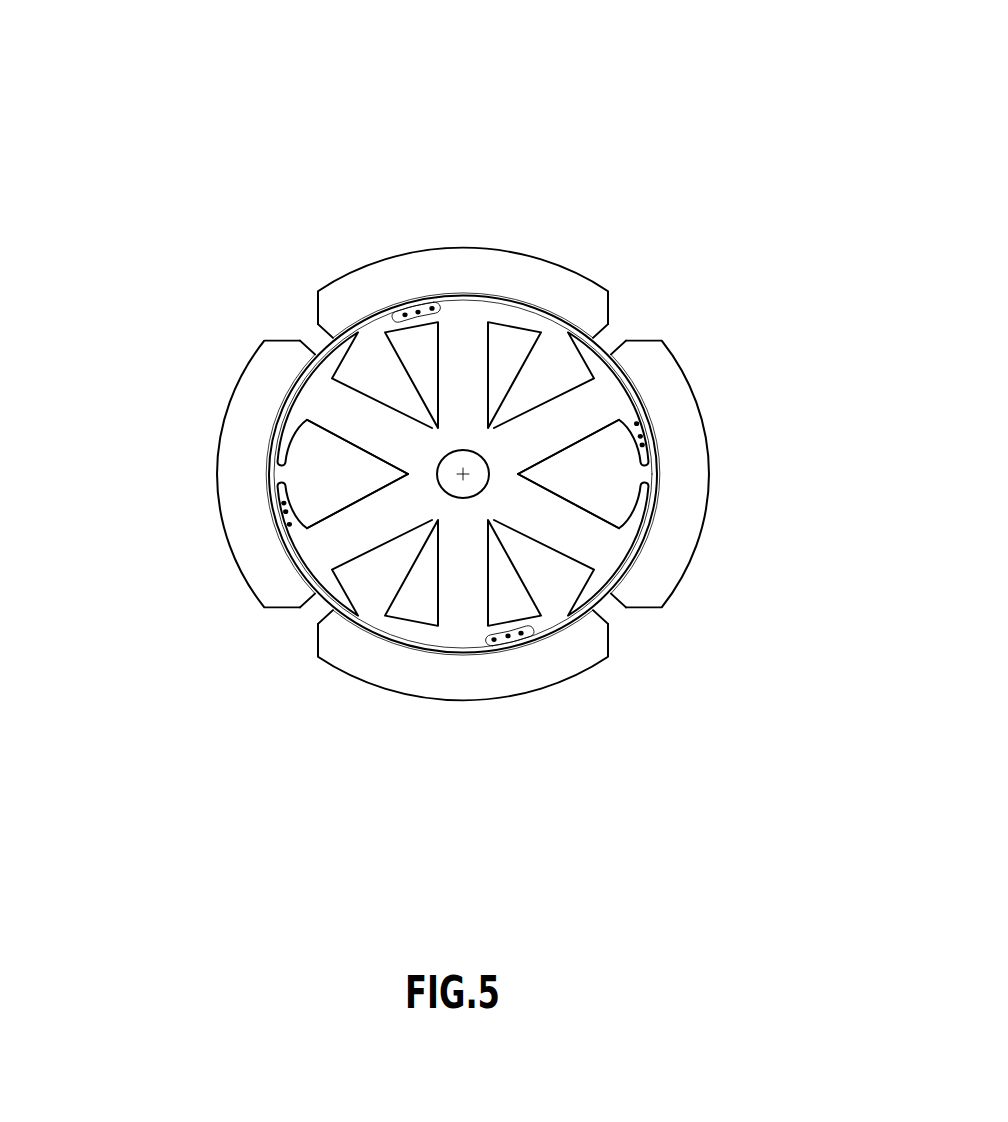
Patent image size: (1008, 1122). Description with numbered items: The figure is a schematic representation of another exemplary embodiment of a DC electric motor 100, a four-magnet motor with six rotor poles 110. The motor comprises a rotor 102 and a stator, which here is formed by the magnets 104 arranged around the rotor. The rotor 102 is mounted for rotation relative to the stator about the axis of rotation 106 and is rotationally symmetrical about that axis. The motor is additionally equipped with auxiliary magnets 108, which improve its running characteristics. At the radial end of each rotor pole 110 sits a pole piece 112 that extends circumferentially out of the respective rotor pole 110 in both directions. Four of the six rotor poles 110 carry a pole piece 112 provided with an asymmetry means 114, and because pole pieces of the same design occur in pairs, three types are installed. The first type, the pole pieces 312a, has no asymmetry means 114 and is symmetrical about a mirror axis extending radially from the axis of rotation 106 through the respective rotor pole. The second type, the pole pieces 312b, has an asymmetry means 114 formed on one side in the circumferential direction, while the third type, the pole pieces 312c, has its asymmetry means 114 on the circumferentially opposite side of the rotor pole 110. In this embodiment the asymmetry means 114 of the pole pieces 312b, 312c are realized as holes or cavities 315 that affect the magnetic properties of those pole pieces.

The DC electric motor 100 is at (250, 107).
The rotor 102 is at (268, 479).
The magnet 104 is at (606, 287).
The axis of rotation 106 is at (465, 483).
The auxiliary magnet 108 is at (260, 345).
The rotor pole 110 is at (390, 553).
The pole piece 112 is at (467, 569).
The asymmetry means 114 is at (388, 308).
The pole piece (first type) 312a is at (297, 383).
The pole piece (second type) 312b is at (630, 373).
The pole piece (third type) 312c is at (463, 297).
The hole or cavity 315 is at (427, 300).